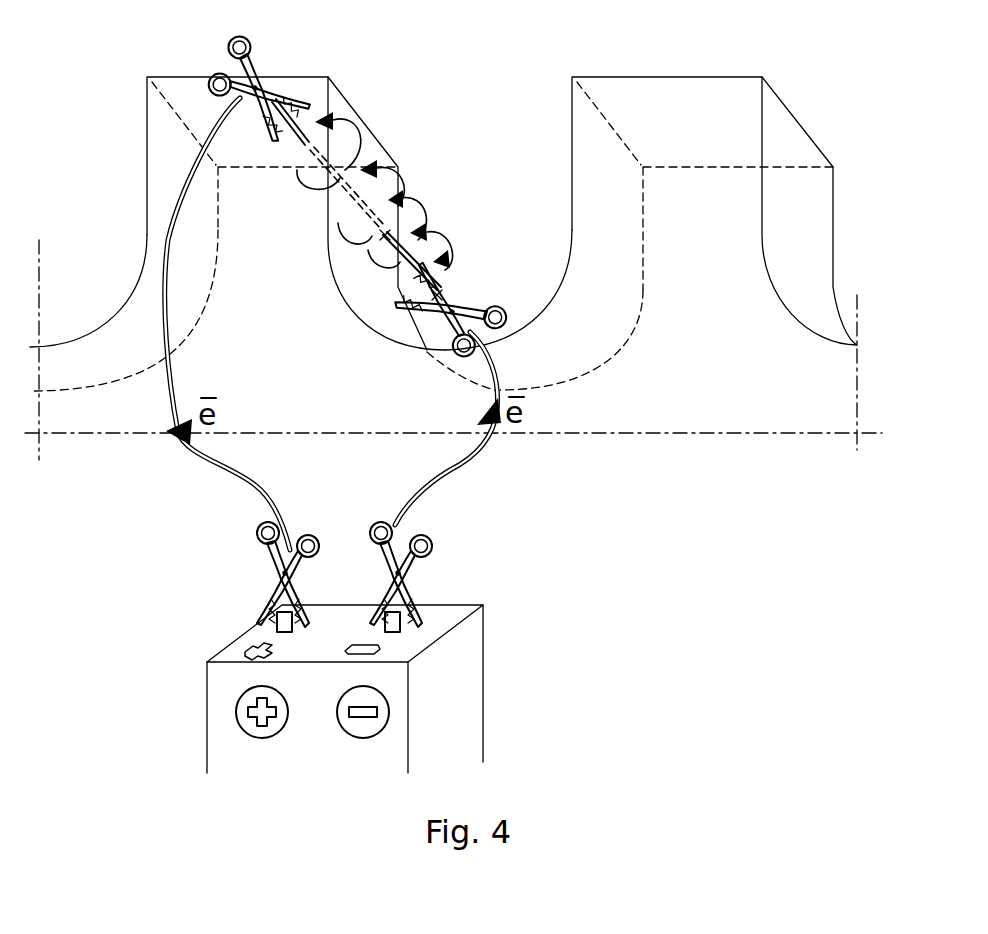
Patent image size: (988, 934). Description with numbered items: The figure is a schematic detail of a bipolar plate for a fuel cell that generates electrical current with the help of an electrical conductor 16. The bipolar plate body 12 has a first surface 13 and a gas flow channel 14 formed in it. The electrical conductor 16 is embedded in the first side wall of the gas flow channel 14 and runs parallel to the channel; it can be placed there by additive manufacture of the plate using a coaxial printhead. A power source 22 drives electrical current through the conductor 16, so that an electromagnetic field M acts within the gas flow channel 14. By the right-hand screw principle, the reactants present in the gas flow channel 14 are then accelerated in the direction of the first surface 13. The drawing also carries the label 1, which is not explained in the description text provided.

The saw blade body with teeth 1 is at (479, 233).
The bipolar plate body 12 is at (832, 410).
The first surface 13 is at (703, 103).
The gas flow channel 14 is at (607, 260).
The electrical conductor 16 is at (309, 118).
The power source 22 is at (490, 668).
The electromagnetic field M is at (402, 162).